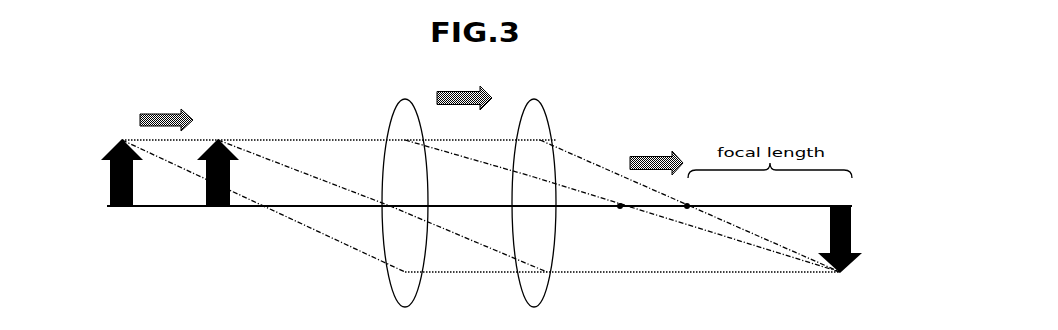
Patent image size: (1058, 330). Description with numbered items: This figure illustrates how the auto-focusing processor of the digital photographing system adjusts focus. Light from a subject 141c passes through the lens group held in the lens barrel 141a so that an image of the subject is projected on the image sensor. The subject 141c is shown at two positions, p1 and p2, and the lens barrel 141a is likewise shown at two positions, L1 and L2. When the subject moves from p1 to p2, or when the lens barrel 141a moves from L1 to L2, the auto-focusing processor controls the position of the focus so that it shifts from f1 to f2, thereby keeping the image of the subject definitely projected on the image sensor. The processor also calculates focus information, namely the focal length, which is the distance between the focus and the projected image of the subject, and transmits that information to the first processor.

The lens barrel 141a is at (390, 120).
The subject 141c is at (134, 197).
The first lens barrel position L1 is at (385, 190).
The second lens barrel position L2 is at (534, 190).
The first subject position p1 is at (148, 201).
The second subject position p2 is at (218, 185).
The first focus position f1 is at (622, 199).
The second focus position f2 is at (689, 199).